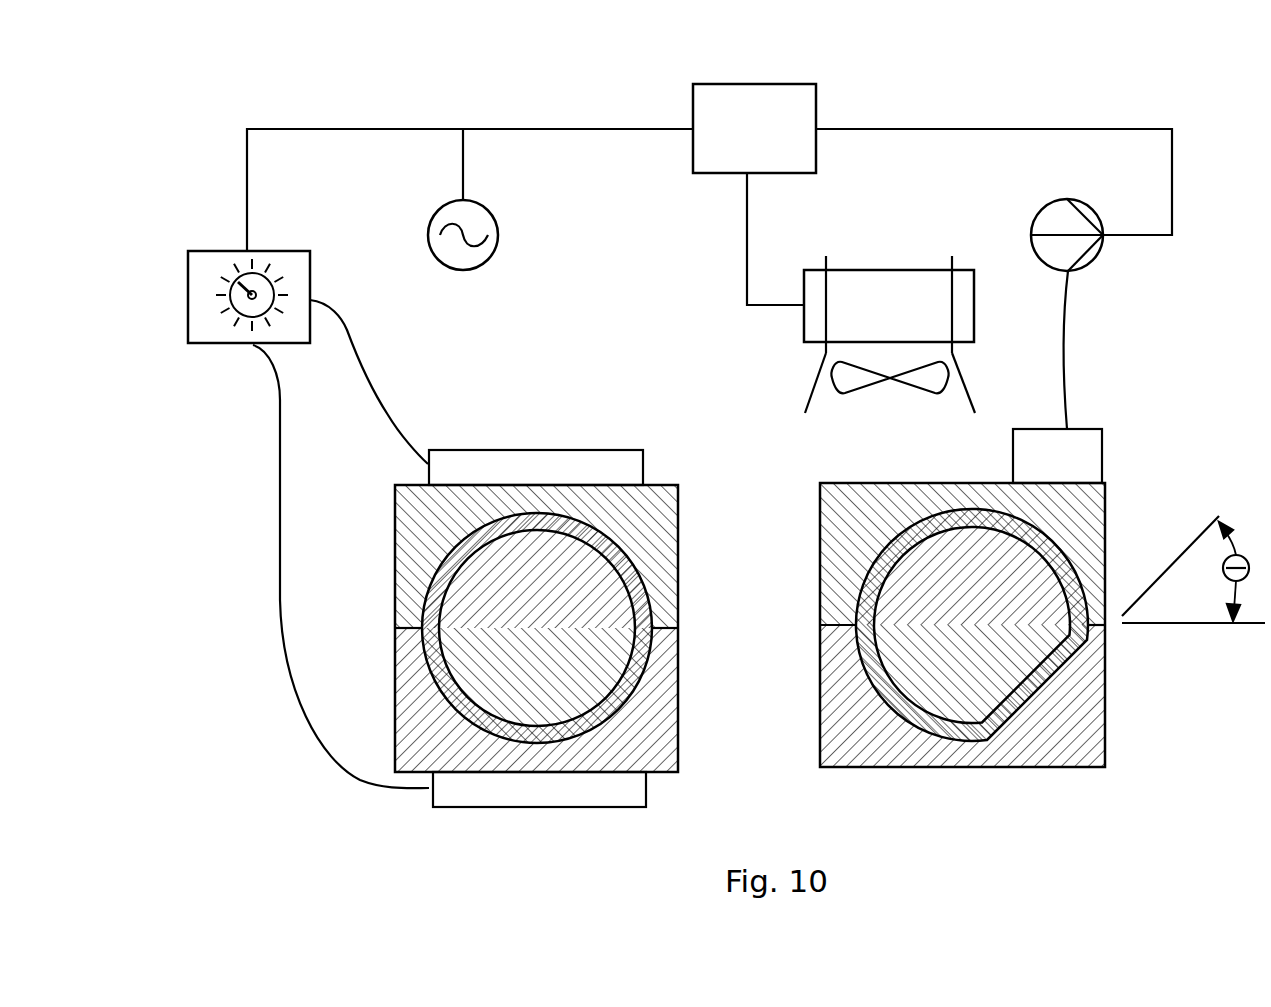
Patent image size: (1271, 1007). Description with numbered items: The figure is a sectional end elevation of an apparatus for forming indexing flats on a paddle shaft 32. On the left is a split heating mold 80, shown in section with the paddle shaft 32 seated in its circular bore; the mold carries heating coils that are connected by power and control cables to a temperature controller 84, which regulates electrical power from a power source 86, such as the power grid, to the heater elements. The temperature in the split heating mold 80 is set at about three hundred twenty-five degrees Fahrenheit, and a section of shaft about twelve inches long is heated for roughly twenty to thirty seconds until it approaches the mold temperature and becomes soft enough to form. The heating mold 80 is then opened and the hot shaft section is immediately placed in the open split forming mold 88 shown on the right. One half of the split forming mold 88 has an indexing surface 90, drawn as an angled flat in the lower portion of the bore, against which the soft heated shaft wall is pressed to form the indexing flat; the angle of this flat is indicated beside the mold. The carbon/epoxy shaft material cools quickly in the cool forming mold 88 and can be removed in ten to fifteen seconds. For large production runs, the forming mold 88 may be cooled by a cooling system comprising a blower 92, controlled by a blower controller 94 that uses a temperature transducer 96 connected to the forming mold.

The paddle shaft 32 is at (515, 531).
The split heating mold 80 is at (574, 622).
The temperature controller 84 is at (188, 297).
The power source 86 is at (473, 270).
The split forming mold 88 is at (1042, 634).
The indexing surface 90 is at (1028, 692).
The blower 92 is at (847, 235).
The blower controller 94 is at (781, 84).
The temperature transducer 96 is at (1103, 240).